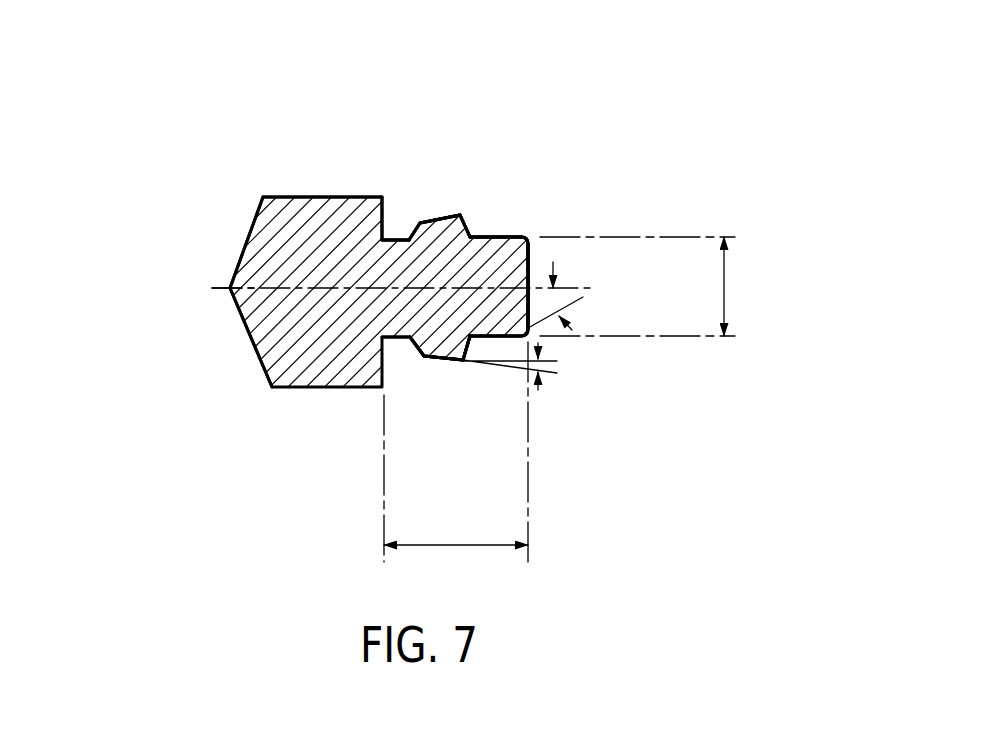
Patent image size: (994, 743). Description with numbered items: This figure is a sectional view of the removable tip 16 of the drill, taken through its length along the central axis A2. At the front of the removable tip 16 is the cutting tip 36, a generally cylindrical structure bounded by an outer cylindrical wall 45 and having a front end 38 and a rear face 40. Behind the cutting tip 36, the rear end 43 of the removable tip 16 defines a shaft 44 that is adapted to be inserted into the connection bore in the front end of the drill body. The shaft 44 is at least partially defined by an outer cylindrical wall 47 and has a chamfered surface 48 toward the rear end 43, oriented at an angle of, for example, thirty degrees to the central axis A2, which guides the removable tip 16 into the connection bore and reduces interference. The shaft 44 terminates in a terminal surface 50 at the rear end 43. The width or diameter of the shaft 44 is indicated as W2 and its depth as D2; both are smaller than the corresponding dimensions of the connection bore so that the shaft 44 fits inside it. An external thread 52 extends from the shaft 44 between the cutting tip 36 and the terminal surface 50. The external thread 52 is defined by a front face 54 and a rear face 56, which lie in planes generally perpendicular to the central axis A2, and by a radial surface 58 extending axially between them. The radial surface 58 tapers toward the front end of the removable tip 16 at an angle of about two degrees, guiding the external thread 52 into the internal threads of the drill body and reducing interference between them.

The removable tip 16 is at (317, 132).
The cutting tip 36 is at (385, 241).
The front end 38 is at (229, 287).
The rear face 40 is at (384, 212).
The rear end 43 is at (678, 218).
The shaft 44 is at (550, 95).
The outer cylindrical wall 45 is at (337, 197).
The outer cylindrical wall 47 is at (528, 237).
The chamfered surface 48 is at (540, 237).
The terminal surface 50 is at (532, 273).
The external thread 52 is at (443, 202).
The front face 54 is at (411, 227).
The rear face 56 is at (510, 237).
The radial surface 58 is at (450, 218).
The central axis A2 is at (226, 295).
The width of the shaft W2 is at (725, 287).
The depth of the shaft D2 is at (454, 545).